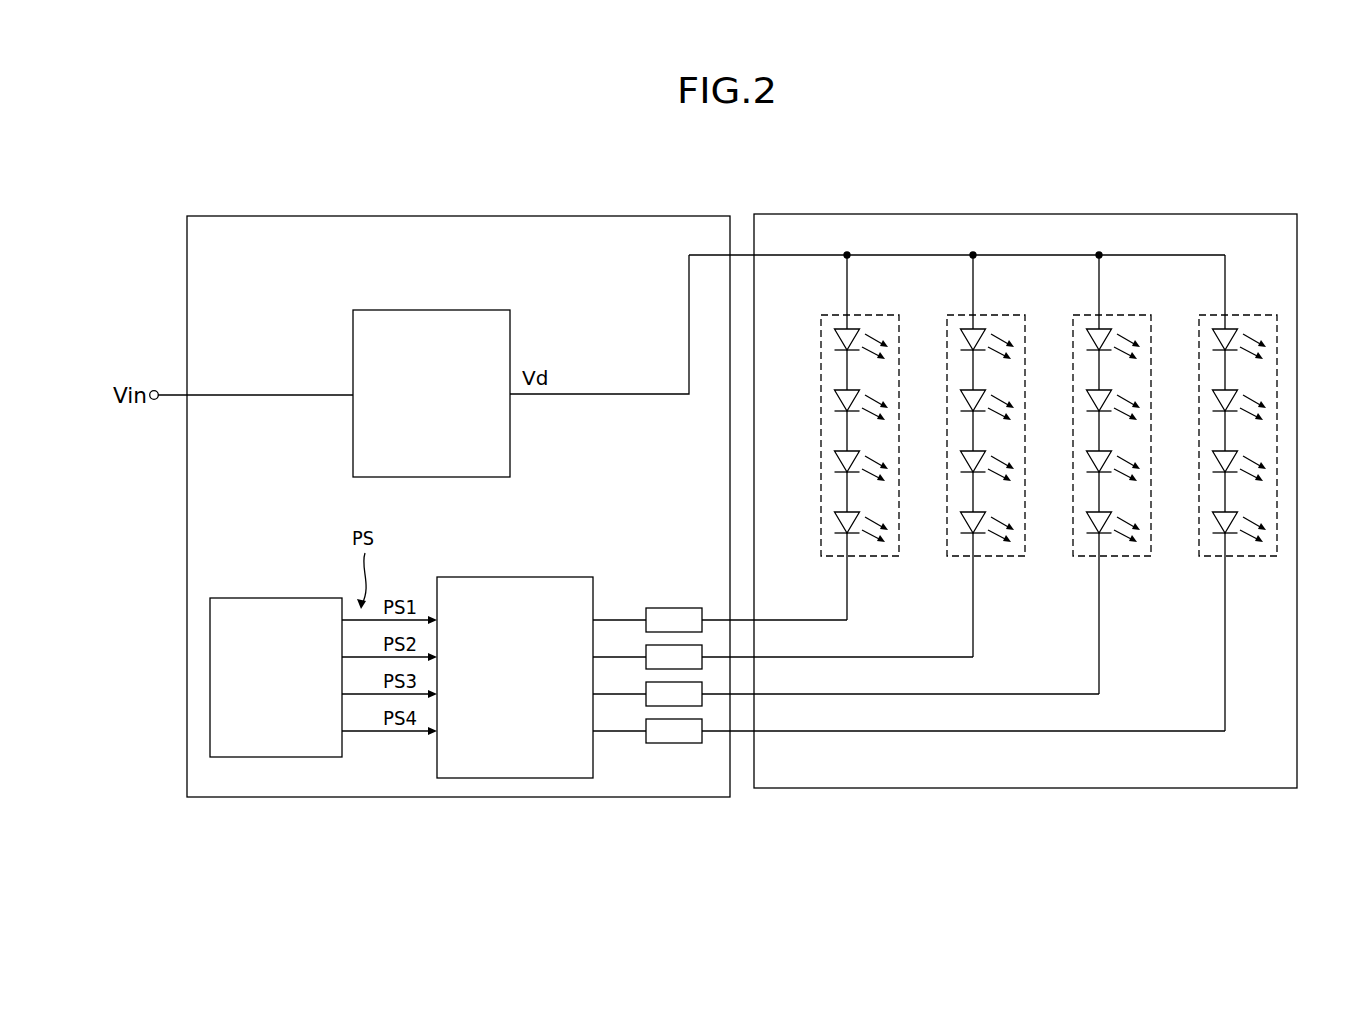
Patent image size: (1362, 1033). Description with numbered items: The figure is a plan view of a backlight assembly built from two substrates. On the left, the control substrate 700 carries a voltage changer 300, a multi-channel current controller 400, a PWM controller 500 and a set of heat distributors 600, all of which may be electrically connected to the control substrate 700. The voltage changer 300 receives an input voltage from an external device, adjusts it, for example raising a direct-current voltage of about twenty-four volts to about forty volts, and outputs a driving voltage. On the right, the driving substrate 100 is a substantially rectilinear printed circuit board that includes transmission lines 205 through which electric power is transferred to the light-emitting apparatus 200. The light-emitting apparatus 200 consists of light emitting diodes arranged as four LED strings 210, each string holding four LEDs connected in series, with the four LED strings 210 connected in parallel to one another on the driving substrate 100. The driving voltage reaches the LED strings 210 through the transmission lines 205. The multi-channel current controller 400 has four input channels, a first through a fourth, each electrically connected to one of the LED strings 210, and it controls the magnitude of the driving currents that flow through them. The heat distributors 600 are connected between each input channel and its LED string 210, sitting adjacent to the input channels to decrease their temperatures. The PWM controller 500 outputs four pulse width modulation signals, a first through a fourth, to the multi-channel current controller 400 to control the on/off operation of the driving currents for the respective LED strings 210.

The driving substrate 100 is at (1046, 214).
The light-emitting apparatus 200 is at (1246, 315).
The transmission lines 205 is at (1157, 255).
The LED strings 210 is at (867, 315).
The voltage changer 300 is at (430, 310).
The multi-channel current controller 400 is at (514, 778).
The PWM controller 500 is at (275, 757).
The heat distributors 600 is at (676, 752).
The control substrate 700 is at (456, 216).